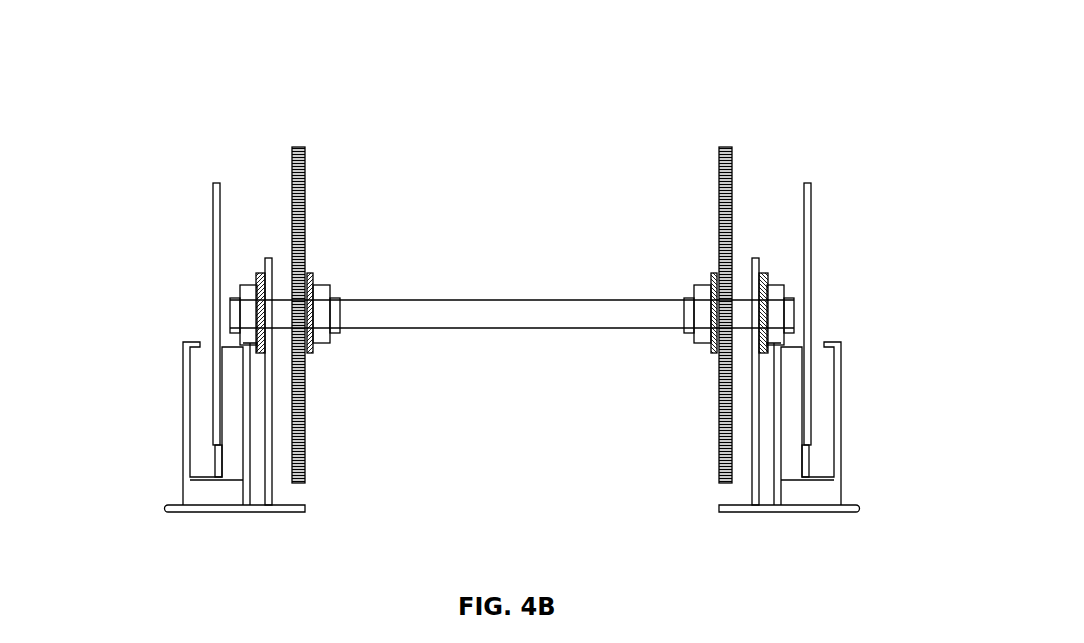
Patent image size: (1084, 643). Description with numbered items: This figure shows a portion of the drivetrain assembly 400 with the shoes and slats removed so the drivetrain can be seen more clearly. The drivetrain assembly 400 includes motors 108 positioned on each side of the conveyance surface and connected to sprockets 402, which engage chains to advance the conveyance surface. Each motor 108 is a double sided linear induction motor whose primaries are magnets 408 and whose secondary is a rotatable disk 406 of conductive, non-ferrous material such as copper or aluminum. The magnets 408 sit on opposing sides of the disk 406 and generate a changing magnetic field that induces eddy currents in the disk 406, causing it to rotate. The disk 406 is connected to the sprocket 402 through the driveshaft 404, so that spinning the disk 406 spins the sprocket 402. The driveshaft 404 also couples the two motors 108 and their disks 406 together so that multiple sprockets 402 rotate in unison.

The drivetrain assembly 400 is at (152, 75).
The sprocket 402 is at (291, 157).
The driveshaft 404 is at (512, 313).
The disk 406 is at (213, 212).
The magnet 408 is at (197, 432).
The motor 108 is at (157, 280).